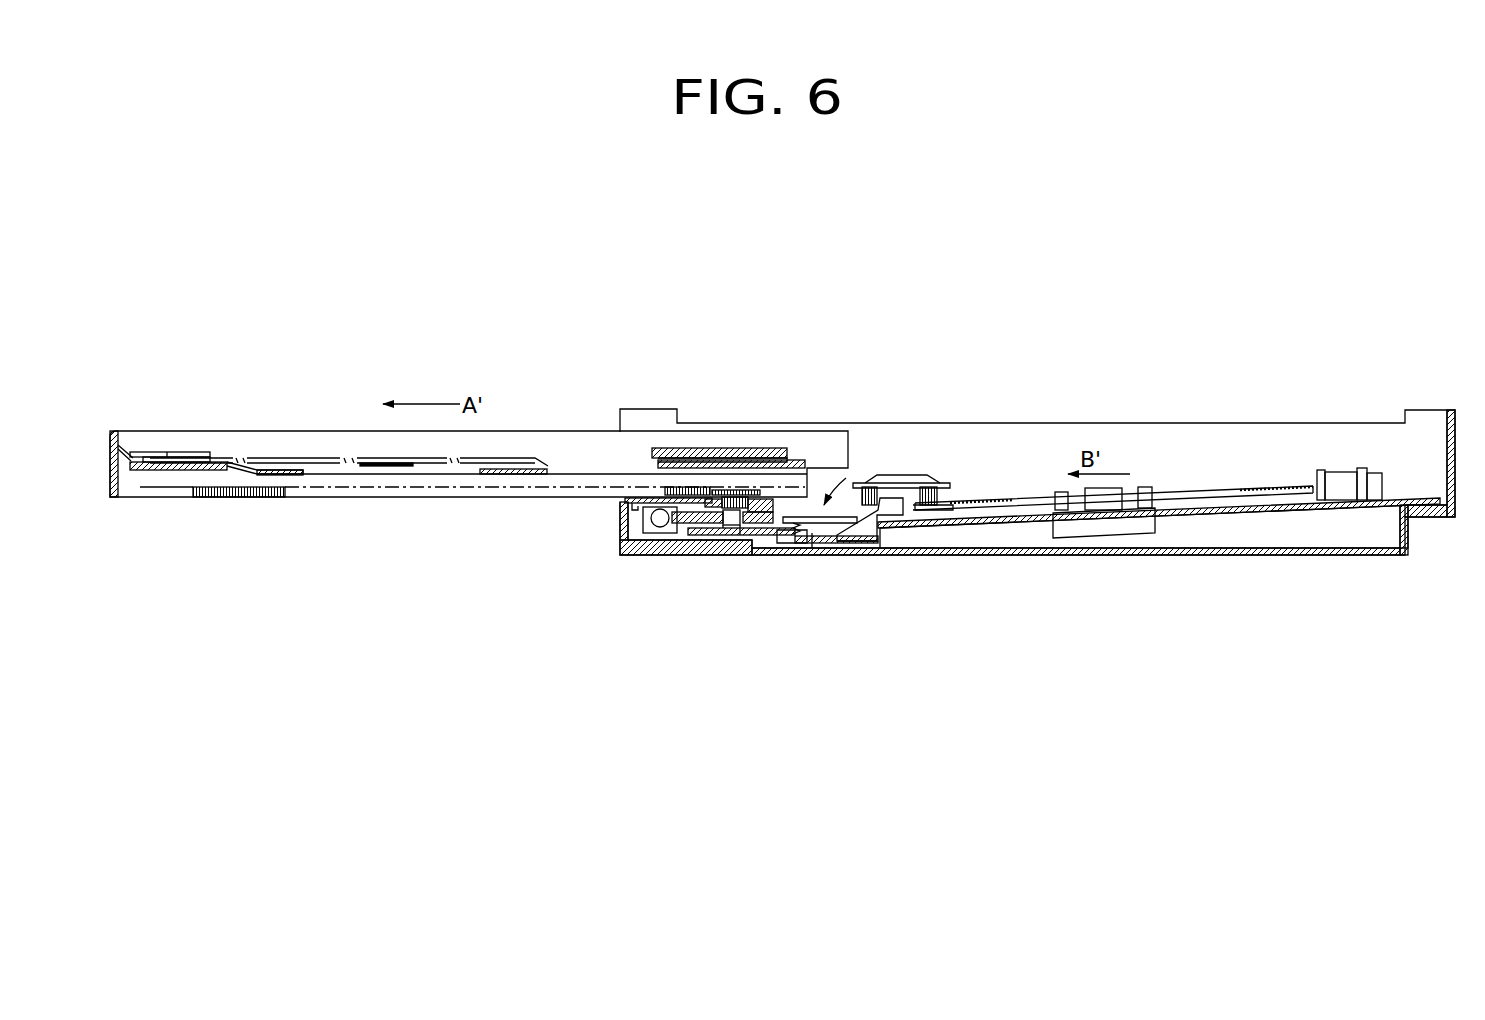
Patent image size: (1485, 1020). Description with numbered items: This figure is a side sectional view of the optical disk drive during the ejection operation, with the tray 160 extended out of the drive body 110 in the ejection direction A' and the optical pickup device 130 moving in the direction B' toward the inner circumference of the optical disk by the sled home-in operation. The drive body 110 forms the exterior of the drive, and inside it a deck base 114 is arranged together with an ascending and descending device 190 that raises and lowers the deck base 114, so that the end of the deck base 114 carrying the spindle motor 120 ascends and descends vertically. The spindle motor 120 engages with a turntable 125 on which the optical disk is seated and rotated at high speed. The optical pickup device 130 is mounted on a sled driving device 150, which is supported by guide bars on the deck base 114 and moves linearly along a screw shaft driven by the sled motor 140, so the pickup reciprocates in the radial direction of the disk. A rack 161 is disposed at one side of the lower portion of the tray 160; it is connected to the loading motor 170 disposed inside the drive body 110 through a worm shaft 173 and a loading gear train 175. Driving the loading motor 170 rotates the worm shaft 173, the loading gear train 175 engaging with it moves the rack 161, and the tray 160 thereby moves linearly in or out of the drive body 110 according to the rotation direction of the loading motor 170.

The drive body 110 is at (1392, 580).
The deck base 114 is at (1283, 510).
The spindle motor 120 is at (935, 480).
The turntable 125 is at (903, 475).
The optical pickup device 130 is at (1106, 492).
The sled motor 140 is at (1336, 480).
The sled driving device 150 is at (1098, 522).
The tray 160 is at (118, 430).
The rack 161 is at (240, 497).
The loading motor 170 is at (648, 533).
The worm shaft 173 is at (662, 527).
The loading gear train 175 is at (774, 488).
The ascending and descending device 190 is at (896, 549).